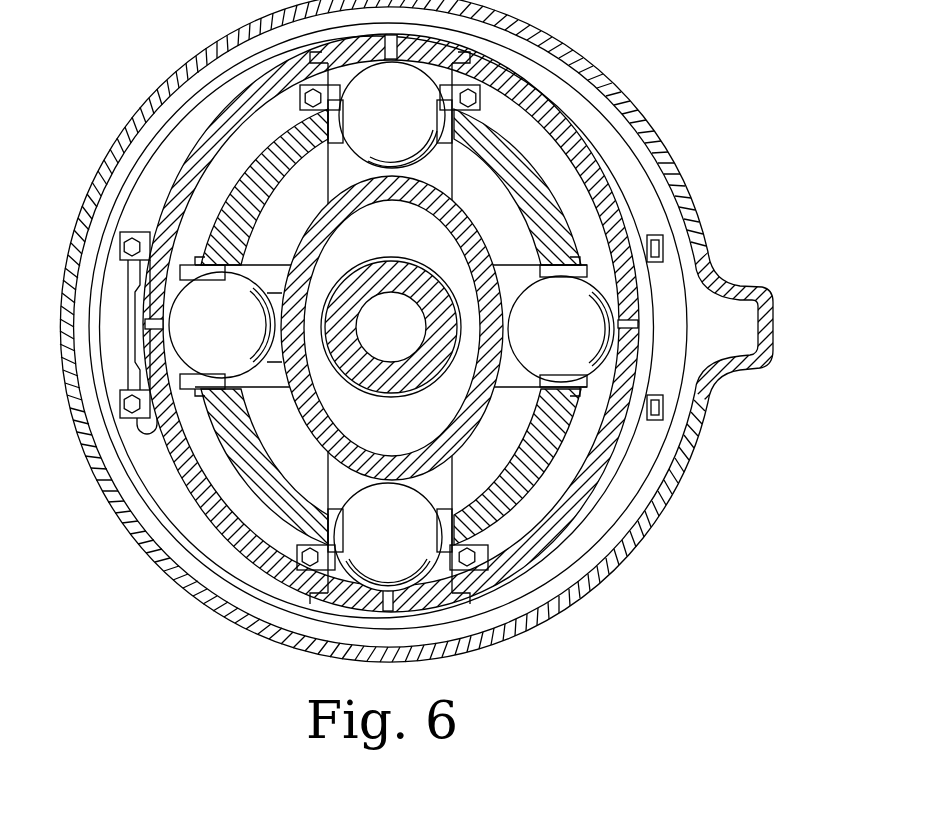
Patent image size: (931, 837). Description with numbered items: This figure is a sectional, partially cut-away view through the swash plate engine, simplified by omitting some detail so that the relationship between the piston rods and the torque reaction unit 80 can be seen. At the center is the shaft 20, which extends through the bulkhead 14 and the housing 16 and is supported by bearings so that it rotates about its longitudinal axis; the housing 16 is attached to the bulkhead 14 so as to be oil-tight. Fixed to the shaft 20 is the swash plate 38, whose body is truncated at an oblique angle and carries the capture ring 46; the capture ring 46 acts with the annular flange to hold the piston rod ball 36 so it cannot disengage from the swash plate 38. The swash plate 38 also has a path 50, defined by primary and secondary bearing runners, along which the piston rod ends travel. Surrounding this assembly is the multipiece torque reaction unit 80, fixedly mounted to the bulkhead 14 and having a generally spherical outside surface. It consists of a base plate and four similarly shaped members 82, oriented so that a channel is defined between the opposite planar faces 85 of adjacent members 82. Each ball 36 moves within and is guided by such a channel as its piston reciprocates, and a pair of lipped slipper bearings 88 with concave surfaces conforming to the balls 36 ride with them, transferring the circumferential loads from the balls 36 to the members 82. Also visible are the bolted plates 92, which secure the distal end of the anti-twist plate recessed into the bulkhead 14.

The bulkhead 14 is at (667, 272).
The housing 16 is at (604, 584).
The shaft 20 is at (398, 378).
The ball 36 is at (374, 130).
The swash plate 38 is at (185, 492).
The capture ring 46 is at (460, 251).
The path 50 is at (546, 152).
The torque reaction unit 80 is at (556, 490).
The members 82 is at (300, 170).
The planar faces 85 is at (206, 274).
The lipped slipper bearings 88 is at (152, 268).
The bolted plates 92 is at (118, 420).